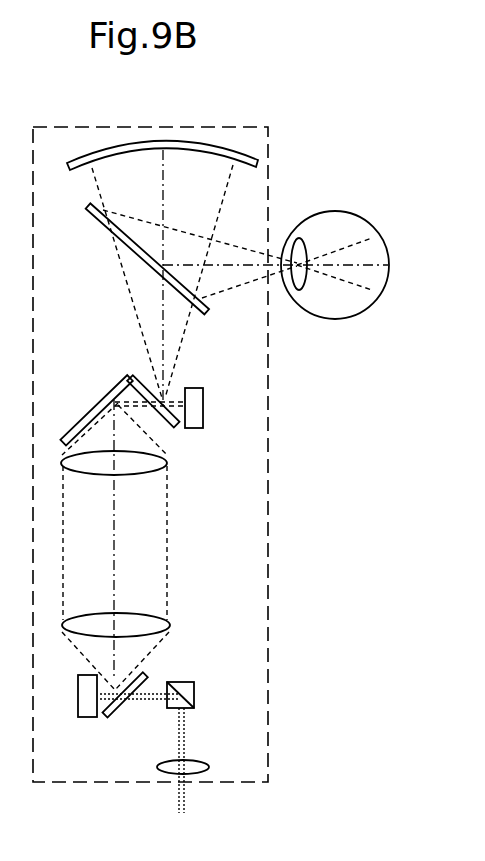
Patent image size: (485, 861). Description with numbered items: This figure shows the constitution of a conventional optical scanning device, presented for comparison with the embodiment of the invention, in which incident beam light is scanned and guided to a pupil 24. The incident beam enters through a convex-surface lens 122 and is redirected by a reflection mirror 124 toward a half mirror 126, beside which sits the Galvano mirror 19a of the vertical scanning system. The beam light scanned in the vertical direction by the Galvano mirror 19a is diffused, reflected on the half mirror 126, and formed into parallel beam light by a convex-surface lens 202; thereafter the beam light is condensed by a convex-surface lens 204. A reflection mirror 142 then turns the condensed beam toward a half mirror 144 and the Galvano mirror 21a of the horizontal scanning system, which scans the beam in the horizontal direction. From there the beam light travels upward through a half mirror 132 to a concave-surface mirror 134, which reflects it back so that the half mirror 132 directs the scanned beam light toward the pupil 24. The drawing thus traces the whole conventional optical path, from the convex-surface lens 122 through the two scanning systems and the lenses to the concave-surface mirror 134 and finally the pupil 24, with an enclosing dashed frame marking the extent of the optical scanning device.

The concave-surface mirror 134 is at (97, 160).
The half mirror 132 is at (88, 206).
The pupil 24 is at (306, 240).
The reflection mirror 142 is at (98, 408).
The half mirror 144 is at (177, 427).
The Galvano mirror 21a is at (203, 404).
The convex-surface lens 204 is at (168, 463).
The convex-surface lens 202 is at (168, 623).
The half mirror 126 is at (140, 678).
The reflection mirror 124 is at (167, 709).
The Galvano mirror 19a is at (87, 717).
The convex-surface lens 122 is at (158, 770).